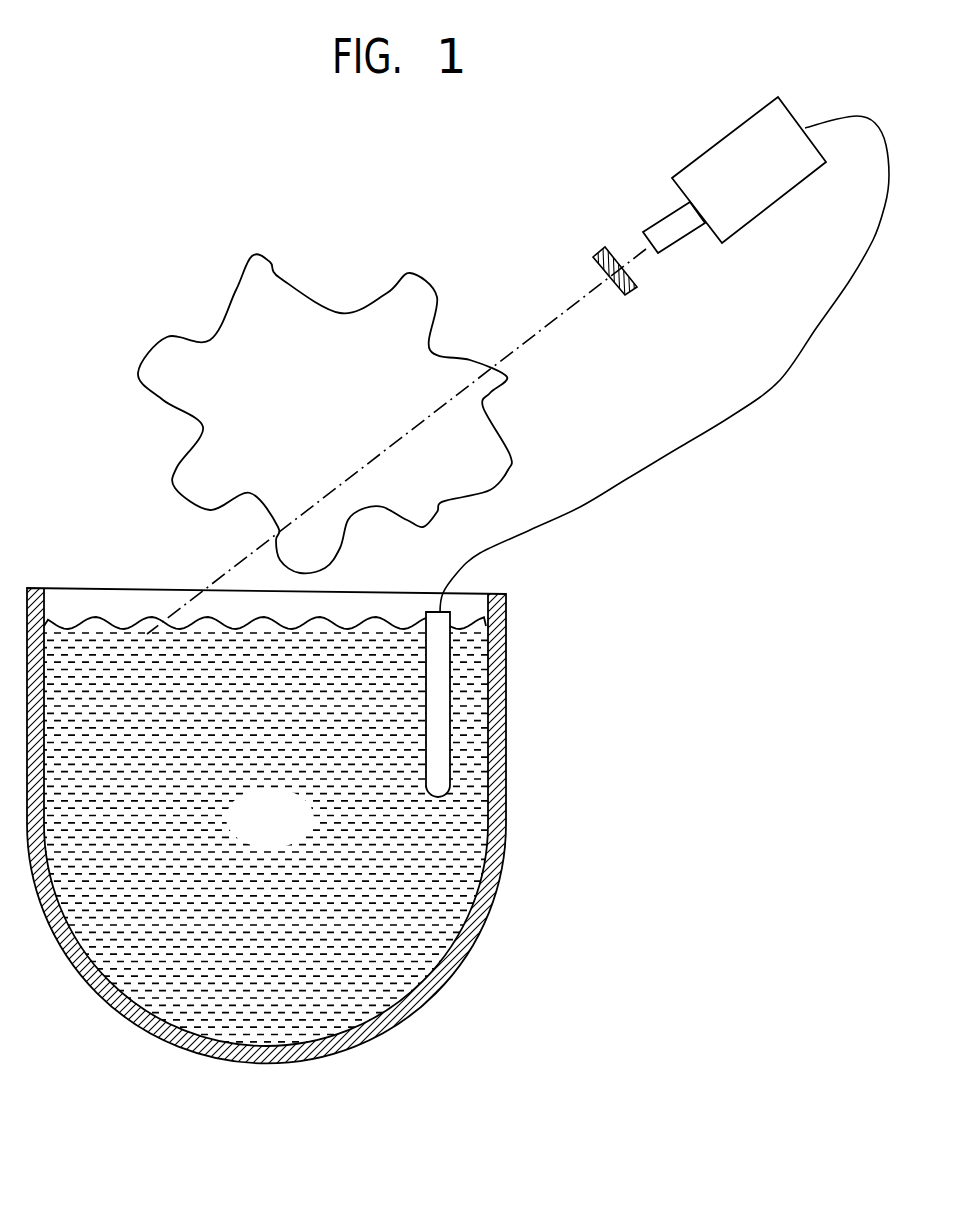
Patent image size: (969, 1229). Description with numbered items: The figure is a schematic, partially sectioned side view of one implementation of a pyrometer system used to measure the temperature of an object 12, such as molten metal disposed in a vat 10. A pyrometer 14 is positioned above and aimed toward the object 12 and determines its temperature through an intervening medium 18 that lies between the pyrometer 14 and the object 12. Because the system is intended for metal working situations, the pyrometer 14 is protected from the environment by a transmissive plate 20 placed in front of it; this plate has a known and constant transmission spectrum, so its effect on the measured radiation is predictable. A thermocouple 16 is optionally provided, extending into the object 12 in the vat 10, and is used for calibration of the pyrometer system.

The vat 10 is at (503, 850).
The object 12 is at (286, 834).
The pyrometer 14 is at (781, 100).
The thermocouple 16 is at (452, 612).
The intervening medium 18 is at (214, 352).
The transmissive plate 20 is at (598, 255).